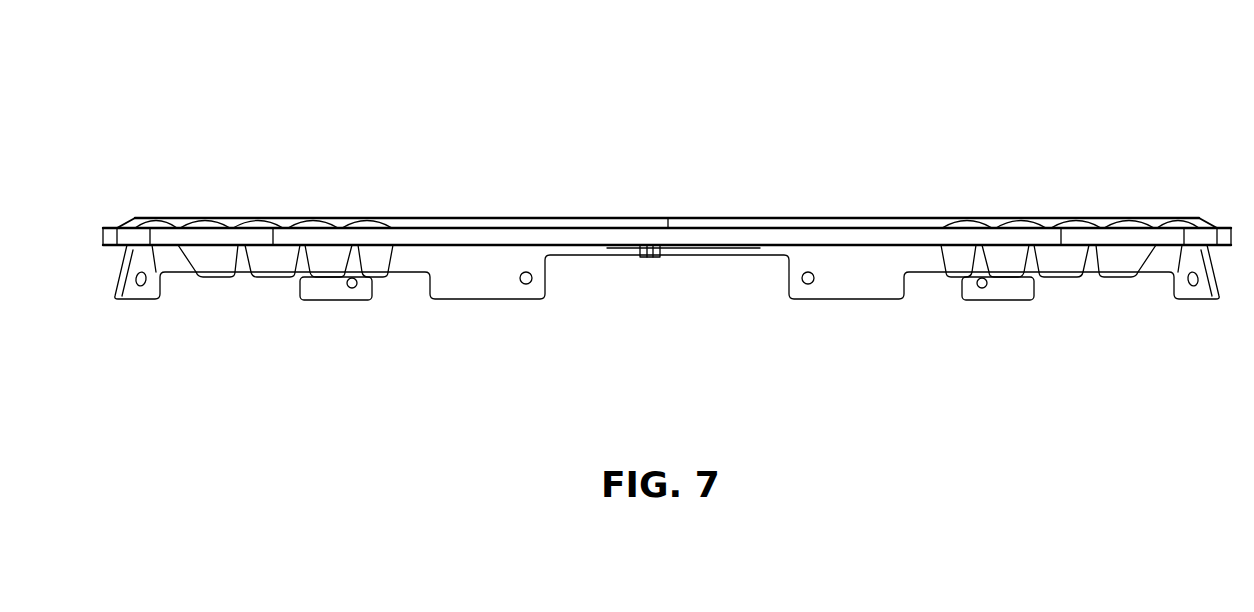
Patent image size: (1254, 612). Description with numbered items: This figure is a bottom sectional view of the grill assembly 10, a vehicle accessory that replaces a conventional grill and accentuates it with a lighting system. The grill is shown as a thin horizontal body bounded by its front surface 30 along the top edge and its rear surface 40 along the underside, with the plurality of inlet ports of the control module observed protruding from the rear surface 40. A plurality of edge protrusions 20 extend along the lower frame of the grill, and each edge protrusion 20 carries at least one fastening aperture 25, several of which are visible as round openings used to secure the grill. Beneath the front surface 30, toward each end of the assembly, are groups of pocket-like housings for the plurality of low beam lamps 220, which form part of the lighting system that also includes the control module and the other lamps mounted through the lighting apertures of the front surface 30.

The tray assembly 10 is at (983, 110).
The edge protrusion 20 is at (128, 292).
The fastening aperture 25 is at (140, 290).
The front surface 30 is at (727, 211).
The rear surface 40 is at (582, 258).
The low beam lamp 220 is at (213, 258).